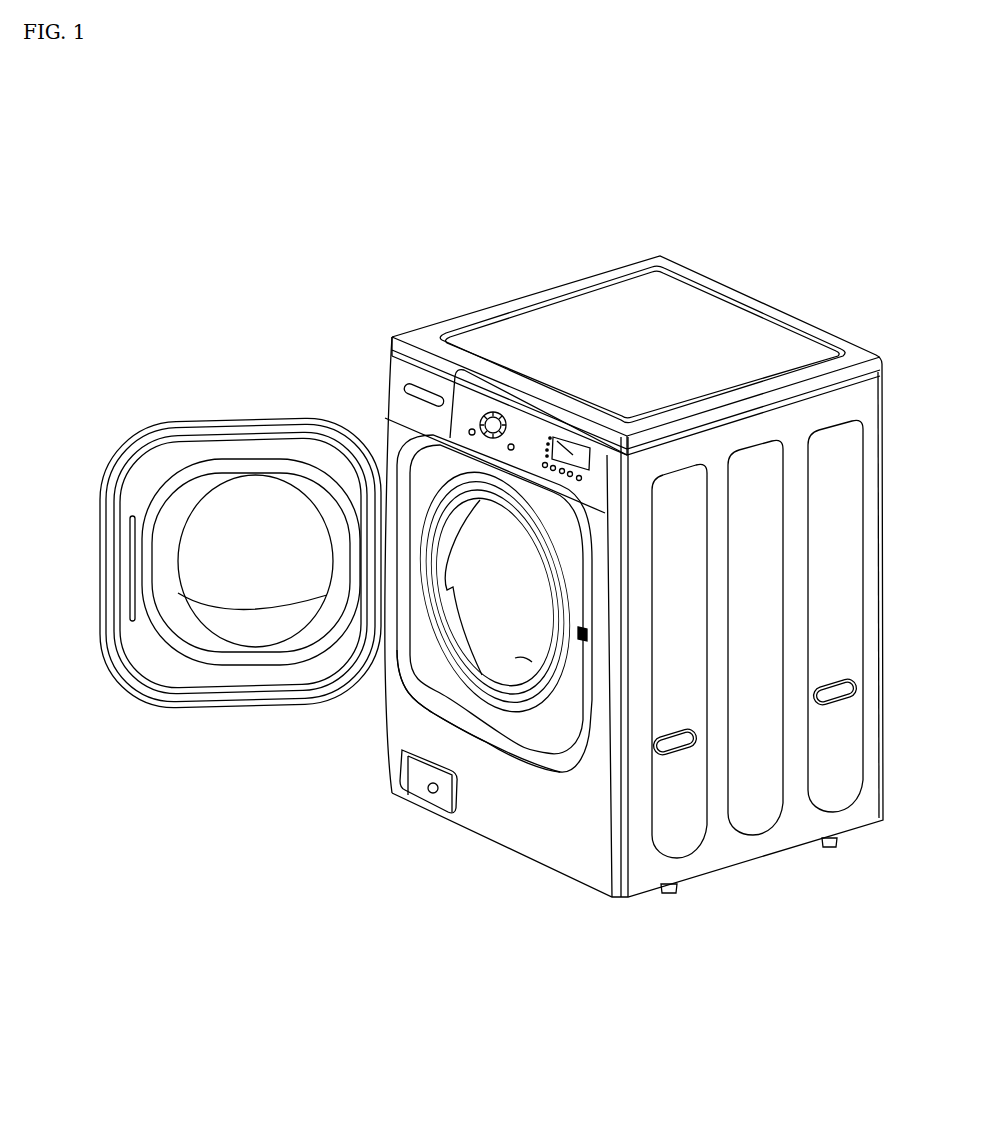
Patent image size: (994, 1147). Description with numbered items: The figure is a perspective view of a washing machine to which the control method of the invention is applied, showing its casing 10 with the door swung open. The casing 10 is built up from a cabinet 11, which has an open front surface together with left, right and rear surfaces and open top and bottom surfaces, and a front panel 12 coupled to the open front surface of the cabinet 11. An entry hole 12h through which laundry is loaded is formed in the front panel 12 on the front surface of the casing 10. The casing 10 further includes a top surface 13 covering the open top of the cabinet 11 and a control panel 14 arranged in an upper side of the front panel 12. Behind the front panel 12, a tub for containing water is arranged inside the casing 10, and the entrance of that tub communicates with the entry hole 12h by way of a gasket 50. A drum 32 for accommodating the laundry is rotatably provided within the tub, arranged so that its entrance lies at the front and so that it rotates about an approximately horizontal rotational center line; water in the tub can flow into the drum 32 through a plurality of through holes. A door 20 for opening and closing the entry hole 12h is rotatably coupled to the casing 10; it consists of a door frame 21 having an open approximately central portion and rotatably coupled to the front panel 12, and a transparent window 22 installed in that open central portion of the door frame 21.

The casing 10 is at (776, 343).
The cabinet 11 is at (722, 522).
The front panel 12 is at (567, 833).
The entry hole 12h is at (532, 662).
The top surface 13 is at (677, 300).
The control panel 14 is at (551, 437).
The door 20 is at (107, 785).
The door frame 21 is at (120, 597).
The transparent window 22 is at (190, 627).
The drum 32 is at (503, 607).
The gasket 50 is at (457, 513).